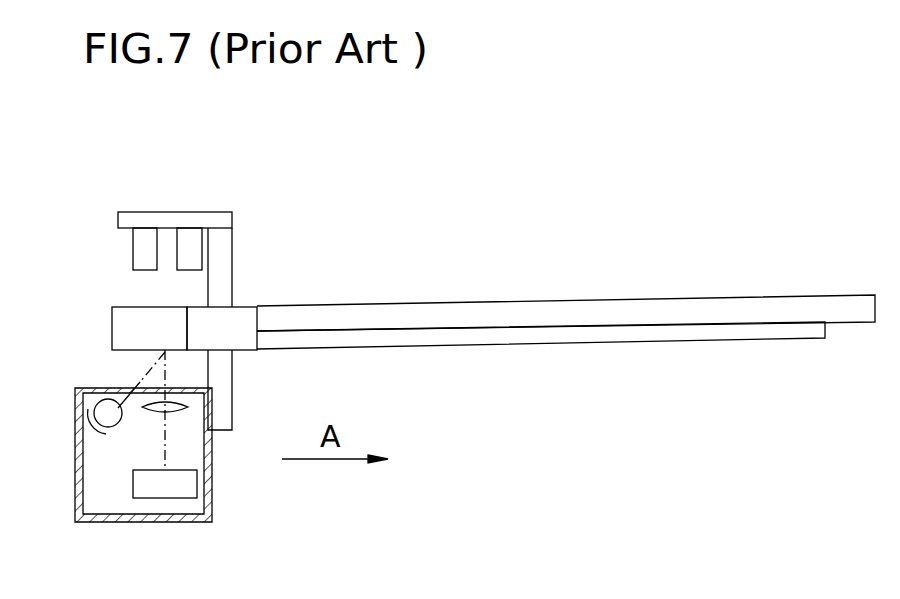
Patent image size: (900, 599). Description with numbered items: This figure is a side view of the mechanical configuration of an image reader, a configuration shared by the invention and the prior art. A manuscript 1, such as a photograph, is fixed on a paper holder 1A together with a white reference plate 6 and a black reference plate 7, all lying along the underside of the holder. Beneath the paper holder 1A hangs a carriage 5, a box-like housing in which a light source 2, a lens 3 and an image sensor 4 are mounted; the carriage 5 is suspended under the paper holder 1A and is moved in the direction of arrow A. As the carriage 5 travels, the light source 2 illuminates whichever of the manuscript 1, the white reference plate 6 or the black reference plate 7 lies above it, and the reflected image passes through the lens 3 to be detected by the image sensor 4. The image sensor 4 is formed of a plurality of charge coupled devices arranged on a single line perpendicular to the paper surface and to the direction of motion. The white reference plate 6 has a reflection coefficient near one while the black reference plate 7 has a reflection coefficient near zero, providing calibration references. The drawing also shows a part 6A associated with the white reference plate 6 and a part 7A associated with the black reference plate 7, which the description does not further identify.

The manuscript 1 is at (743, 333).
The paper holder 1A is at (652, 303).
The light source 2 is at (108, 410).
The lens 3 is at (188, 406).
The image sensor 4 is at (180, 499).
The carriage 5 is at (212, 448).
The white reference plate 6 is at (135, 327).
The connection terminals 6A is at (143, 248).
The black reference plate 7 is at (238, 318).
The connector 7A is at (187, 237).